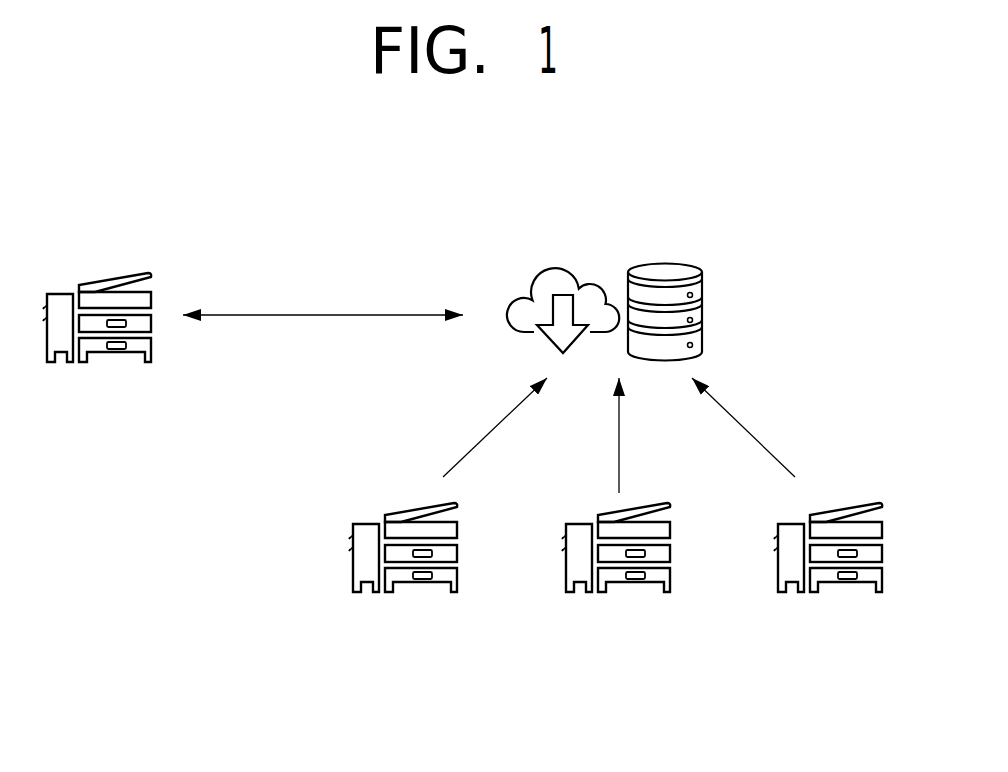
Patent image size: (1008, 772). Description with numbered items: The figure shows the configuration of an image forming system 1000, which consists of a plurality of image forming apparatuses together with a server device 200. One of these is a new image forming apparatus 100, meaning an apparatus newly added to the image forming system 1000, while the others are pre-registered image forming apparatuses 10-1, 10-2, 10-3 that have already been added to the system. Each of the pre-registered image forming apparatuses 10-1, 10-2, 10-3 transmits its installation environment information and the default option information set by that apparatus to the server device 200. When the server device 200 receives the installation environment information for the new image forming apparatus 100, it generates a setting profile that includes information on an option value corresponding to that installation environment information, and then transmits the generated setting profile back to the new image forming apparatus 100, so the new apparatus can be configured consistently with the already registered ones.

The image forming system 1000 is at (500, 157).
The new image forming apparatus 100 is at (113, 277).
The server device 200 is at (663, 260).
The pre-registered image forming apparatus 10-1 is at (422, 580).
The pre-registered image forming apparatus 10-2 is at (635, 580).
The pre-registered image forming apparatus 10-3 is at (847, 580).